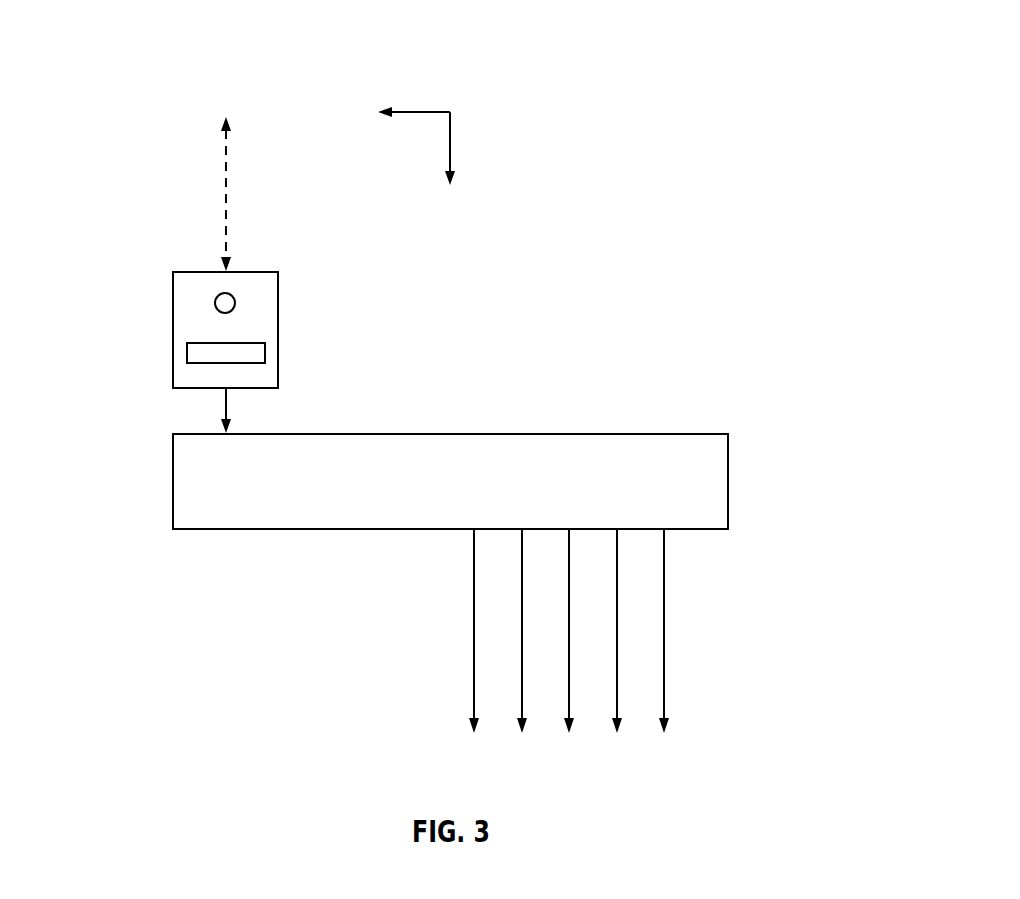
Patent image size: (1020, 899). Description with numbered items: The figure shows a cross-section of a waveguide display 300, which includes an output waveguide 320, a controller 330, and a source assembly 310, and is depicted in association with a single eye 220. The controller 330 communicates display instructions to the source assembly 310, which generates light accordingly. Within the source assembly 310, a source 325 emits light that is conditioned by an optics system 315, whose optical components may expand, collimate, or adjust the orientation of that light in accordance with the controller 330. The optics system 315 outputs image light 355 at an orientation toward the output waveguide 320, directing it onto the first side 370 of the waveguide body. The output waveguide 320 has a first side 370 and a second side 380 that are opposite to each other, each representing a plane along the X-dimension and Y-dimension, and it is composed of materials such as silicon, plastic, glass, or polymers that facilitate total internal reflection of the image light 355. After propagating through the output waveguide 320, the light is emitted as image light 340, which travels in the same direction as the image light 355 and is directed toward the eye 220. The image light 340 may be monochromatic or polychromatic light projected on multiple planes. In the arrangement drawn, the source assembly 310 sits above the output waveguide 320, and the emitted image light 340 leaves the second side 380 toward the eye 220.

The waveguide display 300 is at (156, 42).
The controller 330 is at (230, 88).
The source assembly 310 is at (173, 298).
The source 325 is at (236, 304).
The optics system 315 is at (265, 352).
The image light 355 is at (221, 407).
The output waveguide 320 is at (173, 524).
The first side 370 is at (491, 433).
The second side 380 is at (287, 531).
The image light 340 is at (473, 625).
The eye 220 is at (617, 757).